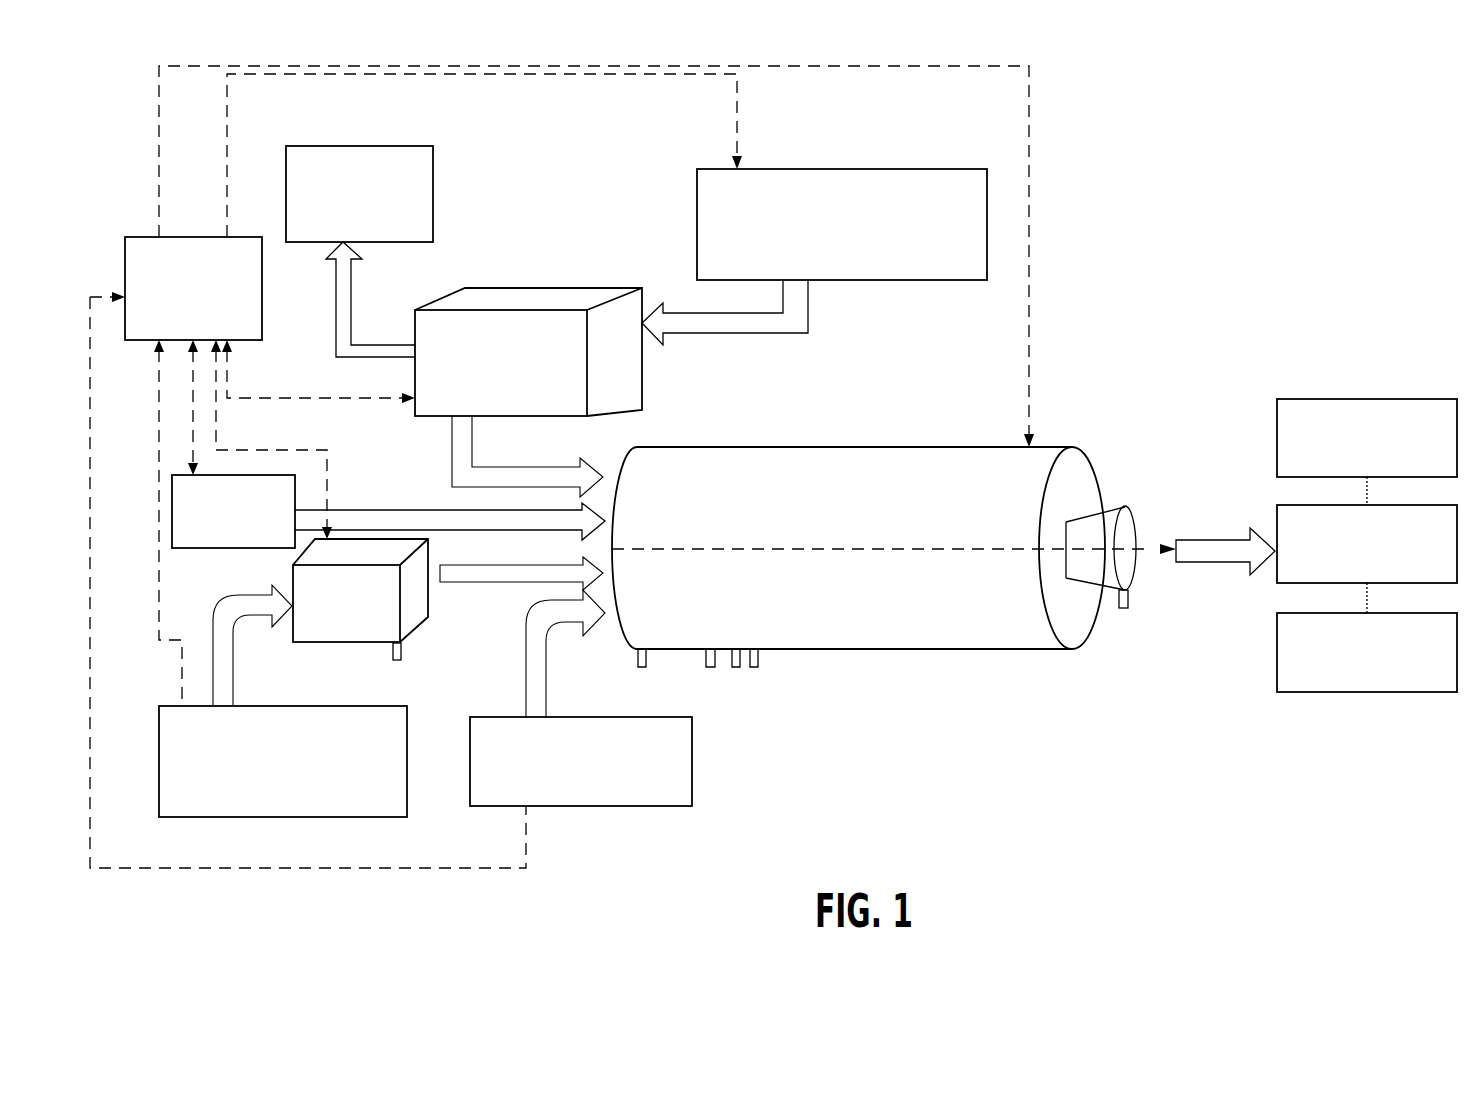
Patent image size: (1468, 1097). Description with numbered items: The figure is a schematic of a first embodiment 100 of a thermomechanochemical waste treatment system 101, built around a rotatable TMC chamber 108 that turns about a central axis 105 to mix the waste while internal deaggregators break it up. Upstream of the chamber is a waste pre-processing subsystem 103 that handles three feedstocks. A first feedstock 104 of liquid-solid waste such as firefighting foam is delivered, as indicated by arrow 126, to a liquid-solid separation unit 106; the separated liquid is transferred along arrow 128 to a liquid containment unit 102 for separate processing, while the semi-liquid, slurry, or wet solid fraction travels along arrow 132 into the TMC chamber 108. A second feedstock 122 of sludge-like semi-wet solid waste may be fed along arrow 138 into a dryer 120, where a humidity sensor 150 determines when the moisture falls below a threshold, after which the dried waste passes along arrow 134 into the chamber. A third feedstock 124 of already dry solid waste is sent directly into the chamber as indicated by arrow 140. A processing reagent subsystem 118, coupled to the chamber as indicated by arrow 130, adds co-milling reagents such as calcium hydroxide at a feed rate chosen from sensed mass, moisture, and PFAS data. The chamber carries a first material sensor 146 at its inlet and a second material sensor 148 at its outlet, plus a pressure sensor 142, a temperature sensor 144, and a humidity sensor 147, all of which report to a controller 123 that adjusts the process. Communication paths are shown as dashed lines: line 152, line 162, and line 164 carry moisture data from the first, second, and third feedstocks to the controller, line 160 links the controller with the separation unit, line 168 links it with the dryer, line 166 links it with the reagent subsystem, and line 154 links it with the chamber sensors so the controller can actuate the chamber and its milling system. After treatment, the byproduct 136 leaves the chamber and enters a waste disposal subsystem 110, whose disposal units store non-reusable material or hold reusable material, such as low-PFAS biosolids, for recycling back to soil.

The first embodiment 100 is at (1413, 94).
The thermomechanochemical (TMC) waste treatment system 101 is at (1209, 176).
The liquid containment unit 102 is at (359, 171).
The waste pre-processing subsystem 103 is at (155, 928).
The first feedstock 104 is at (842, 200).
The central axis 105 is at (1084, 479).
The liquid-solid separation unit 106 is at (528, 325).
The TMC chamber 108 is at (894, 524).
The waste disposal subsystem 110 is at (1367, 497).
The processing reagent subsystem 118 is at (233, 531).
The dryer 120 is at (360, 605).
The second feedstock 122 is at (296, 775).
The controller 123 is at (193, 288).
The third feedstock 124 is at (581, 776).
The arrow 126 is at (725, 323).
The arrow 128 is at (364, 315).
The arrow 130 is at (450, 508).
The arrow 132 is at (504, 456).
The arrow 134 is at (520, 592).
The byproduct after treatment 136 is at (1225, 569).
The arrow 138 is at (256, 645).
The arrow 140 is at (532, 653).
The pressure sensor 142 is at (793, 673).
The temperature sensor 144 is at (785, 694).
The first material sensor 146 is at (608, 676).
The humidity sensor 147 is at (716, 733).
The second material sensor 148 is at (1164, 633).
The humidity sensor 150 is at (424, 668).
The dashed line 152 is at (484, 155).
The dashed line 154 is at (596, 256).
The dashed line 160 is at (318, 392).
The dashed line 162 is at (145, 523).
The dashed line 164 is at (308, 603).
The dashed line 166 is at (148, 407).
The dashed line 168 is at (271, 439).